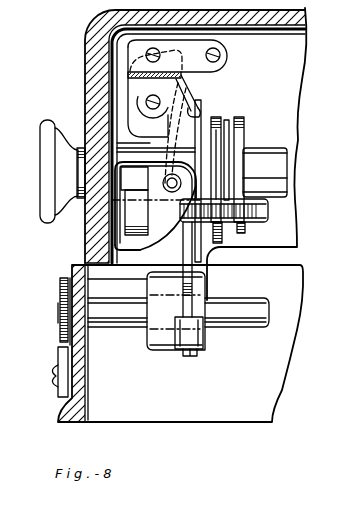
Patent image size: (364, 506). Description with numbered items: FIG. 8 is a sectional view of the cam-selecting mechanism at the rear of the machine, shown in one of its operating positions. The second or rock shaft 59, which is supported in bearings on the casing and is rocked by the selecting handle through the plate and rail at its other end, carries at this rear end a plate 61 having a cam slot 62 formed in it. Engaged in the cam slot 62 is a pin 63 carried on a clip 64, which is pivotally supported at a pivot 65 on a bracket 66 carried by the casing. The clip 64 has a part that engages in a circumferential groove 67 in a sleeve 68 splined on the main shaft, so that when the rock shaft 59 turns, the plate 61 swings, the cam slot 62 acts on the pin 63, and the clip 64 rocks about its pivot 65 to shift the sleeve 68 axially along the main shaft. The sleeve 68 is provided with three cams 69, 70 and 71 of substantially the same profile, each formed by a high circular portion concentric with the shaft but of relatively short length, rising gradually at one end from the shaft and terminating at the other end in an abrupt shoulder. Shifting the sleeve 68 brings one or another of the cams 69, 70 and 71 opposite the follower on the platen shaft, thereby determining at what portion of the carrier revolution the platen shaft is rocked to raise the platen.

The rock shaft 59 is at (260, 207).
The plate 61 is at (127, 178).
The cam slot 62 is at (122, 218).
The pin 63 is at (171, 193).
The clip 64 is at (190, 85).
The pivot 65 is at (146, 115).
The bracket 66 is at (230, 56).
The circumferential groove 67 is at (156, 129).
The sleeve 68 is at (244, 142).
The cam 69 is at (200, 118).
The cam 70 is at (222, 121).
The cam 71 is at (243, 121).